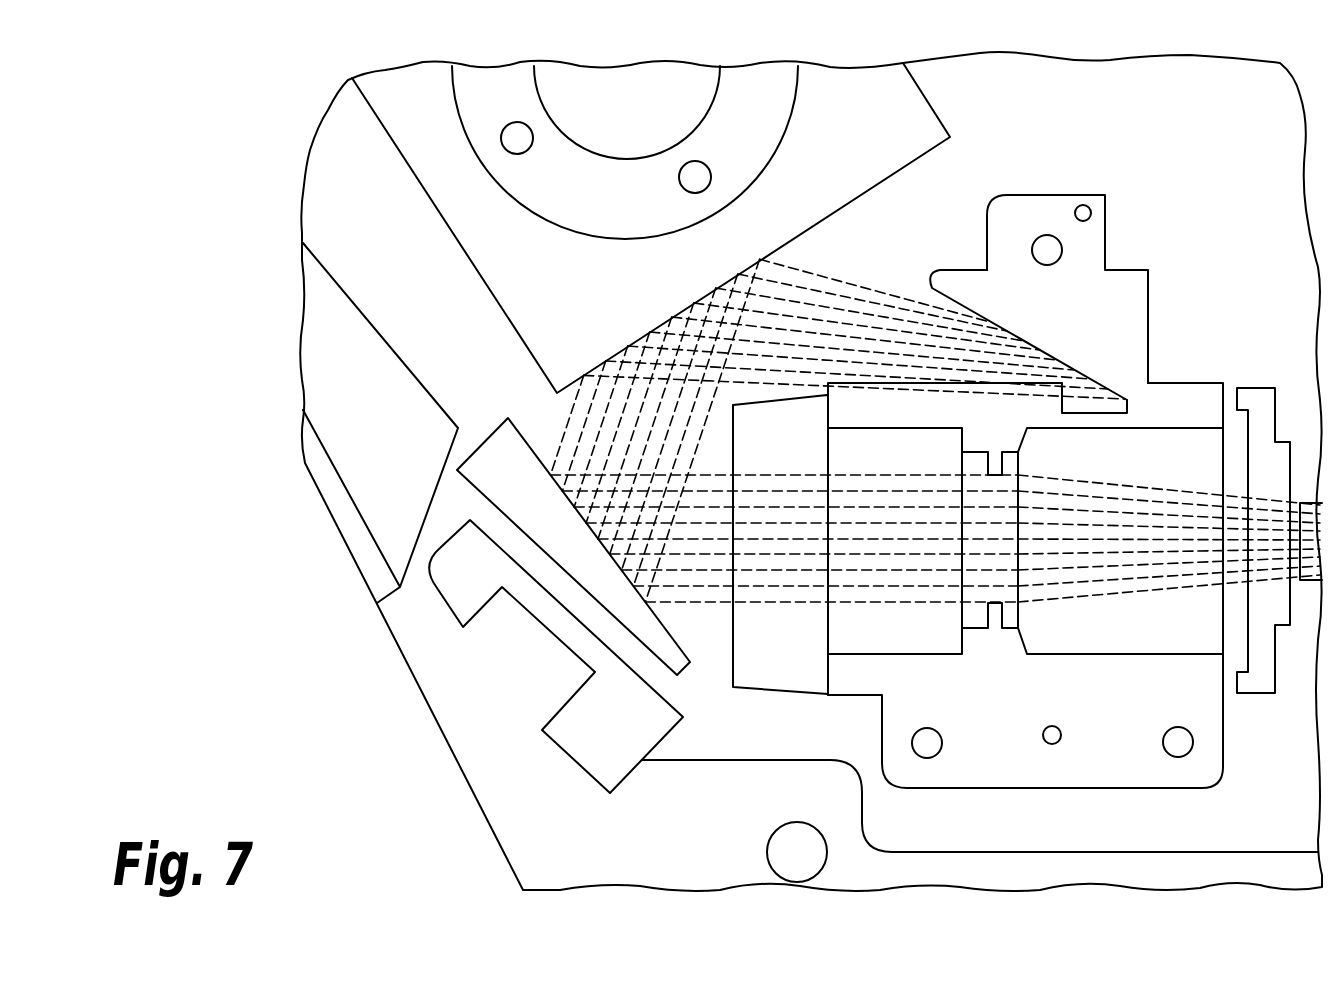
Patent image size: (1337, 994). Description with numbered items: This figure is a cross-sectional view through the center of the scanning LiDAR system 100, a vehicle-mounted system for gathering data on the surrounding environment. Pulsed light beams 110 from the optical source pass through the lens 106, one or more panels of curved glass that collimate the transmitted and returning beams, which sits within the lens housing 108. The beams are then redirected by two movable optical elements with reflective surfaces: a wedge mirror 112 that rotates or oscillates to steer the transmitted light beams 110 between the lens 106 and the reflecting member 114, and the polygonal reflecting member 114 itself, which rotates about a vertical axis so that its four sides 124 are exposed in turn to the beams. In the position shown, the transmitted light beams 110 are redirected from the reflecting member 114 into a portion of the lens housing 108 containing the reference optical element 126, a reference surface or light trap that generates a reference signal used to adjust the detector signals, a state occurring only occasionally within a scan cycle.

The scanning LiDAR system 100 is at (352, 632).
The lens 106 is at (1183, 463).
The lens housing 108 is at (977, 790).
The light beam 110 is at (1146, 580).
The wedge mirror 112 is at (582, 546).
The reflecting member 114 is at (427, 112).
The sides 124 is at (433, 207).
The reference optical element 126 is at (1007, 193).